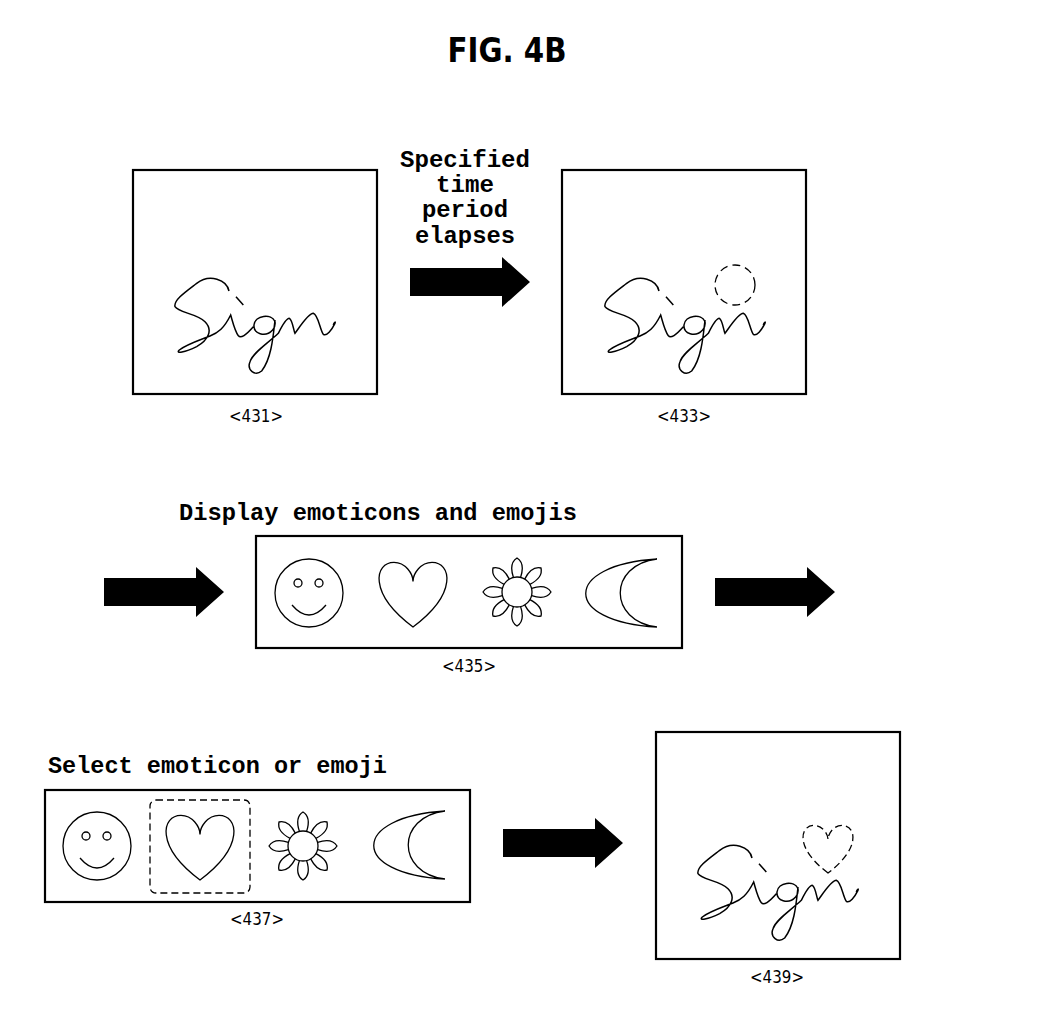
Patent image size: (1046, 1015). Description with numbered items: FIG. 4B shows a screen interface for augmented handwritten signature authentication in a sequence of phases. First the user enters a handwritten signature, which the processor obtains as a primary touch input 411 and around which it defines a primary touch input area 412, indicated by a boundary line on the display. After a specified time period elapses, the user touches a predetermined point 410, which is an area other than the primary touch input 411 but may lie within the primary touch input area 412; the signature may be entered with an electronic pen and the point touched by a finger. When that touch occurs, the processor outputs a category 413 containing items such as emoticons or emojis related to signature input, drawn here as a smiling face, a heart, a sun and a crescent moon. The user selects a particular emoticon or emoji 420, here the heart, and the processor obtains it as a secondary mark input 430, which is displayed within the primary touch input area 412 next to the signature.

The predetermined point 410 is at (750, 267).
The primary touch input 411 is at (174, 302).
The primary touch input area 412 is at (283, 170).
The category 413 is at (575, 535).
The particular emoticon or emoji 420 is at (176, 893).
The secondary mark input 430 is at (852, 828).